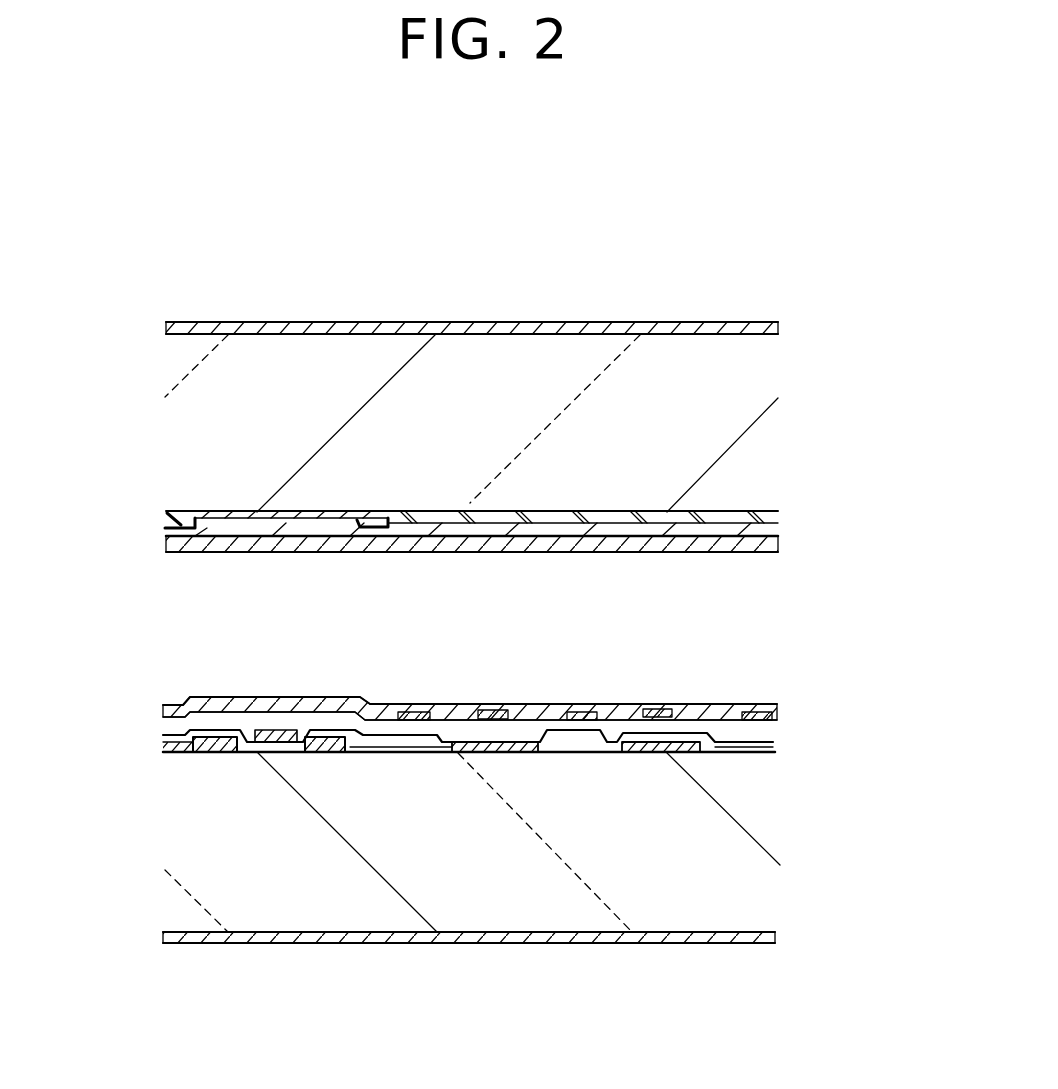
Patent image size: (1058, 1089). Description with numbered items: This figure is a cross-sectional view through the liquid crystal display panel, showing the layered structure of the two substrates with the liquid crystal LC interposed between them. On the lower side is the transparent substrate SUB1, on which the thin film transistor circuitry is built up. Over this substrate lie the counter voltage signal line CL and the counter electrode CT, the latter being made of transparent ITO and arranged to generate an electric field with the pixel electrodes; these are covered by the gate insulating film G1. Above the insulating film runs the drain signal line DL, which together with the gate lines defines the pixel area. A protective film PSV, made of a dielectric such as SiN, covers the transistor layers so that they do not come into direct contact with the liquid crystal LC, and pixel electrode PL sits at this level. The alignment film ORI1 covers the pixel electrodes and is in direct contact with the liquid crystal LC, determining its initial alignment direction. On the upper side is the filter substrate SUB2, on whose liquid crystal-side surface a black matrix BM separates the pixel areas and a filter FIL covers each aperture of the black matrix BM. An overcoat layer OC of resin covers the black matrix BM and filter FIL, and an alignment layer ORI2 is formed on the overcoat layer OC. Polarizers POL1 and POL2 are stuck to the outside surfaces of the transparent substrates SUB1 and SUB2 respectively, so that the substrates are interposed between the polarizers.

The upper polarizer POL2 is at (676, 322).
The transparent substrate SUB2 is at (200, 438).
The black matrix BM is at (215, 518).
The filter FIL is at (770, 517).
The overcoat layer OC is at (772, 529).
The alignment layer ORI2 is at (765, 556).
The liquid crystal LC is at (663, 625).
The pixel electrode PL is at (581, 703).
The alignment film ORI1 is at (772, 707).
The drain signal line DL is at (267, 730).
The protective film PSV is at (163, 713).
The gate insulating film G1 is at (772, 747).
The counter voltage signal line CL is at (323, 755).
The counter electrode CT is at (627, 753).
The transparent substrate SUB1 is at (768, 885).
The lower polarizer POL1 is at (705, 945).